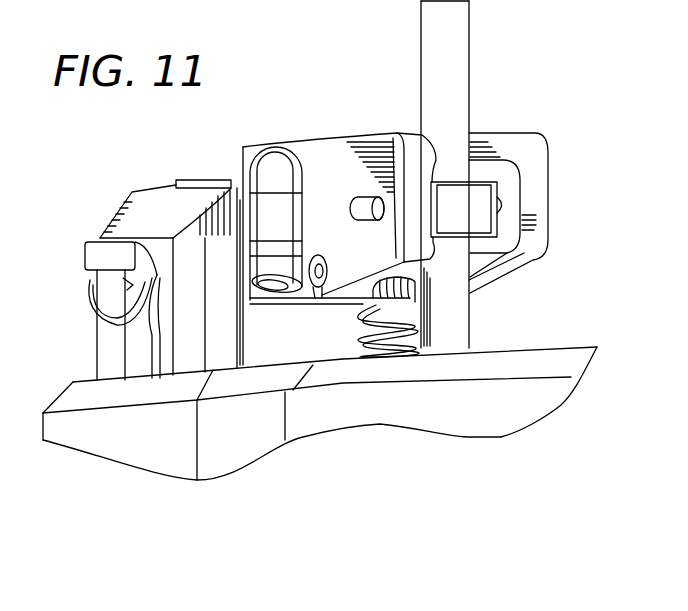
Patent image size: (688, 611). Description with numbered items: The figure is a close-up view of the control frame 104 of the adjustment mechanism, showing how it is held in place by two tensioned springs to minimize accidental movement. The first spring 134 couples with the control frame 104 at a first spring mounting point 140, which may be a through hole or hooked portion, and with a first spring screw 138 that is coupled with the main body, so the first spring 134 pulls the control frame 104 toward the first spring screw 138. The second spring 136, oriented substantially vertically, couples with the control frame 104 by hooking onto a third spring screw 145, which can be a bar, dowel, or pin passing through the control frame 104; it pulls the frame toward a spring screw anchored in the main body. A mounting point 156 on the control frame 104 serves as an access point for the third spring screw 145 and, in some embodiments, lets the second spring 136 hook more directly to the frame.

The control frame 104 is at (347, 155).
The first spring 134 is at (259, 306).
The second spring 136 is at (410, 285).
The first spring screw 138 is at (100, 352).
The first spring mounting point 140 is at (278, 292).
The third spring screw 145 is at (413, 280).
The mounting point 156 is at (315, 298).